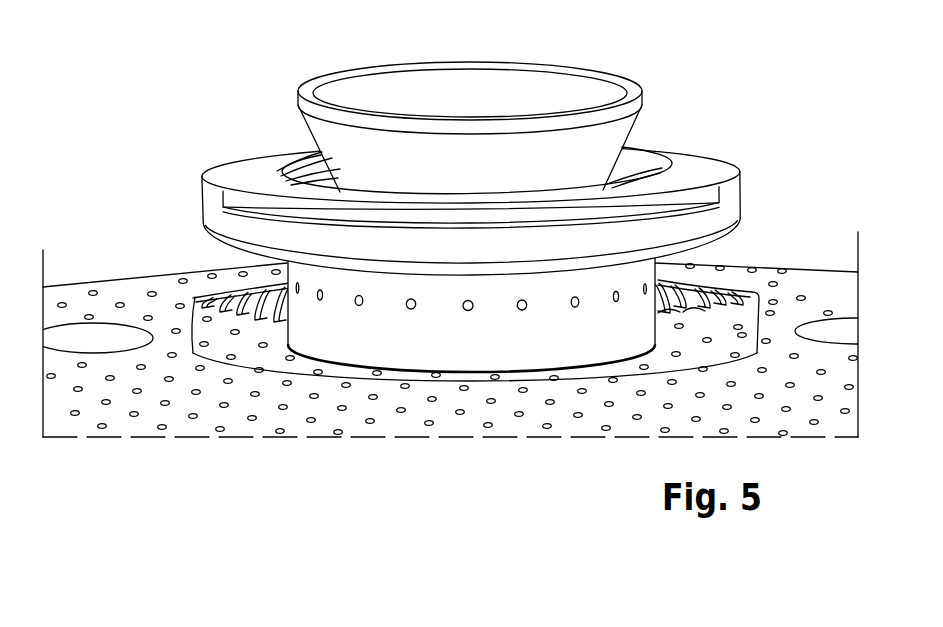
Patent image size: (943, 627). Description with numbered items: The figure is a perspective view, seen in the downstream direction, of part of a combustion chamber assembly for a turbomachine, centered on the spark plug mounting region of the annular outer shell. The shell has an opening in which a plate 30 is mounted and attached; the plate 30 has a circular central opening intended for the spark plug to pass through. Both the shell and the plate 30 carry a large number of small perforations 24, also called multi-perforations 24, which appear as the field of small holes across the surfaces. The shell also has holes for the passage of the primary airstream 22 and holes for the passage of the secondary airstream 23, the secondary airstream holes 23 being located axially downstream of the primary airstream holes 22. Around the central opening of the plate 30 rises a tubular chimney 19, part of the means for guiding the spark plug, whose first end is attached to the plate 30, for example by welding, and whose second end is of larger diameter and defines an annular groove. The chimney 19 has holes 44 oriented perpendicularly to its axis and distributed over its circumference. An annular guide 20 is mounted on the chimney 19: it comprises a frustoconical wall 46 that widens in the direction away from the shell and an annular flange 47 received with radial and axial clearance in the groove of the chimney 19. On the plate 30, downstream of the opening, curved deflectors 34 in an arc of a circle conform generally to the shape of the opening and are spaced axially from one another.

The tubular chimney 19 is at (725, 212).
The annular guide 20 is at (484, 107).
The primary airstream holes 22 is at (99, 340).
The secondary airstream holes 23 is at (65, 278).
The perforations 24 is at (742, 335).
The plate 30 is at (249, 362).
The curved deflectors 34 is at (253, 302).
The holes 44 is at (357, 305).
The frustoconical wall 46 is at (397, 98).
The annular flange 47 is at (317, 182).